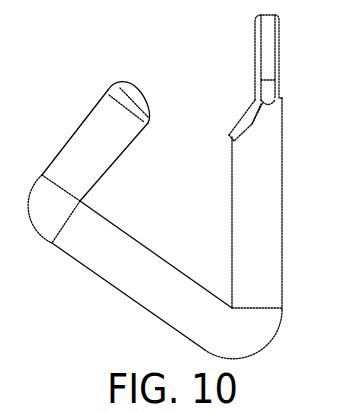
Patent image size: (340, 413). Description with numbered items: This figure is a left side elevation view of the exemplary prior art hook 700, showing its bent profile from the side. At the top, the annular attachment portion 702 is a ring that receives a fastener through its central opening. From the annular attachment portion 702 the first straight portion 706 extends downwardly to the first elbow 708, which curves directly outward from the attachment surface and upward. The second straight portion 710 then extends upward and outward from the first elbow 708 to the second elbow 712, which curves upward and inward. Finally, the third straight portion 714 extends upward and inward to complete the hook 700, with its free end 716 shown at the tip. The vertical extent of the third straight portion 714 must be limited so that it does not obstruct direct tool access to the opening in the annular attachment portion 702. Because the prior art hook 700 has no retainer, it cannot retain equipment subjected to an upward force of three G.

The exemplary prior art hook 700 is at (155, 40).
The annular attachment portion 702 is at (273, 47).
The first straight portion 706 is at (250, 163).
The first elbow 708 is at (245, 338).
The second straight portion 710 is at (133, 288).
The second elbow 712 is at (43, 210).
The third straight portion 714 is at (95, 132).
The rounded end cap 716 is at (135, 95).